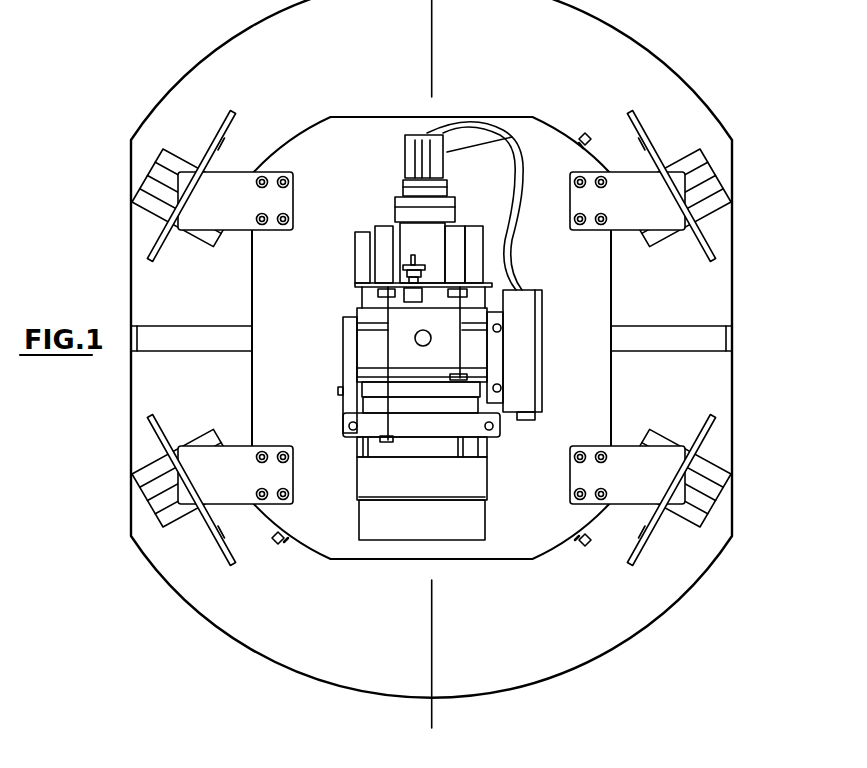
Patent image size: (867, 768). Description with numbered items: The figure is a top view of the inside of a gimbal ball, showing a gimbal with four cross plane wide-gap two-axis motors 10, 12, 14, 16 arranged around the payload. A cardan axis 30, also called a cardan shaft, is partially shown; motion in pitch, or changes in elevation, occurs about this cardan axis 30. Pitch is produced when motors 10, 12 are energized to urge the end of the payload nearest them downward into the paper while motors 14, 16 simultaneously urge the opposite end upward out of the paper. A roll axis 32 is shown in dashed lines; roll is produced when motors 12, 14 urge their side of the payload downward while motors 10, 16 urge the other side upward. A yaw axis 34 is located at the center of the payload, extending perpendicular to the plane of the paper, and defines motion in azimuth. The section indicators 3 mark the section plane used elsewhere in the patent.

The cross plane wide-gap two-axis motor 10 is at (207, 139).
The cross plane wide-gap two-axis motor 12 is at (664, 147).
The cross plane wide-gap two-axis motor 14 is at (663, 531).
The cross plane wide-gap two-axis motor 16 is at (209, 536).
The cardan axis 30 is at (703, 356).
The roll axis 32 is at (426, 661).
The yaw axis 34 is at (414, 339).
The section line 3- 3 is at (758, 467).